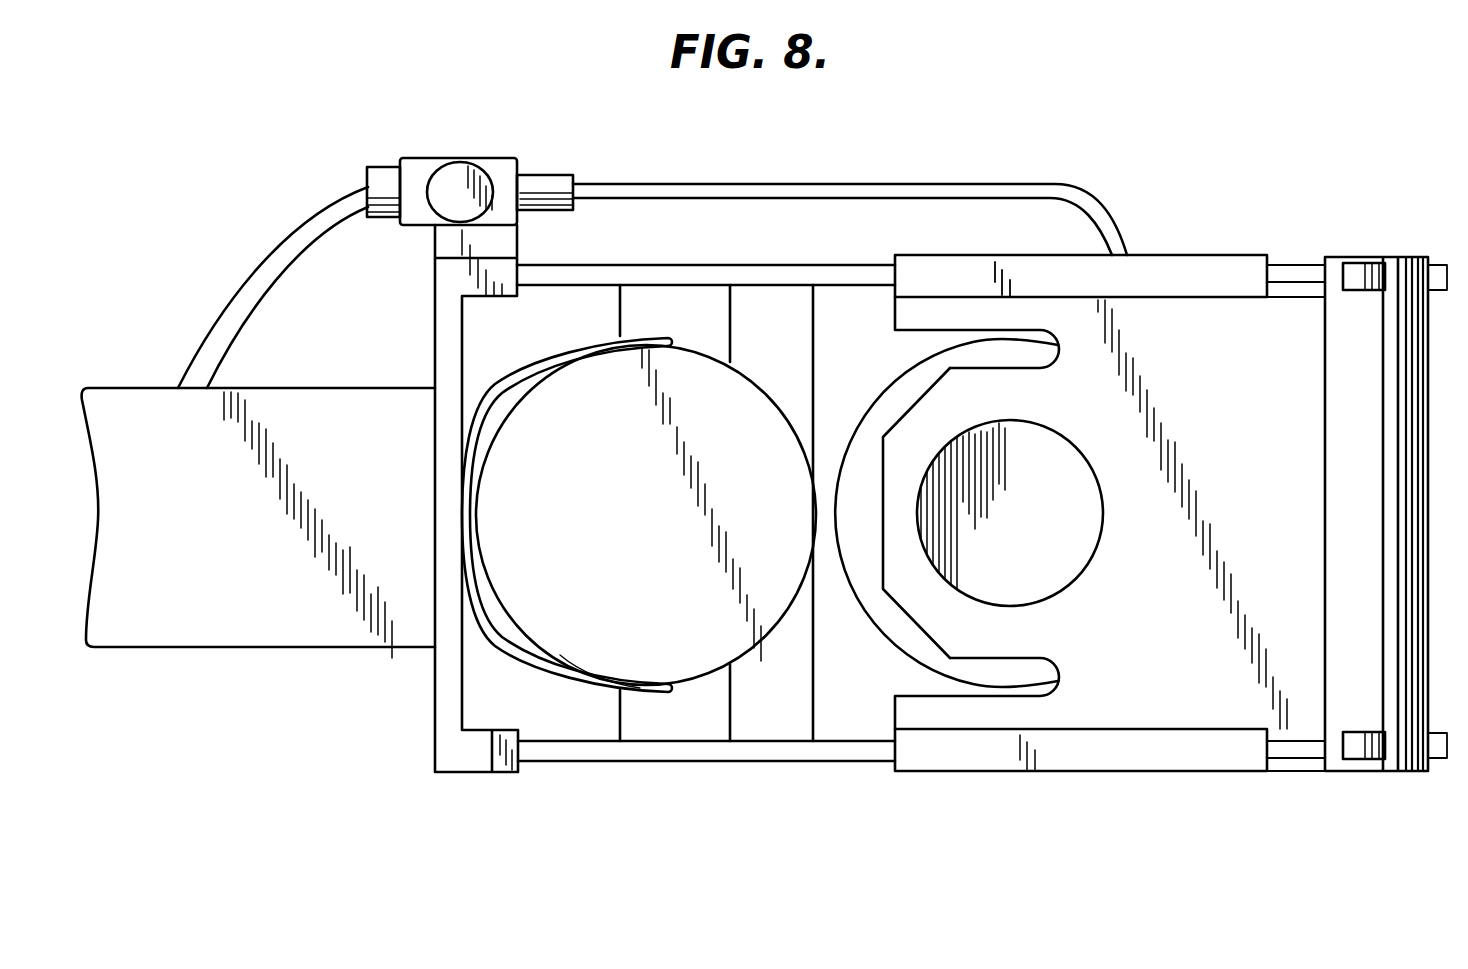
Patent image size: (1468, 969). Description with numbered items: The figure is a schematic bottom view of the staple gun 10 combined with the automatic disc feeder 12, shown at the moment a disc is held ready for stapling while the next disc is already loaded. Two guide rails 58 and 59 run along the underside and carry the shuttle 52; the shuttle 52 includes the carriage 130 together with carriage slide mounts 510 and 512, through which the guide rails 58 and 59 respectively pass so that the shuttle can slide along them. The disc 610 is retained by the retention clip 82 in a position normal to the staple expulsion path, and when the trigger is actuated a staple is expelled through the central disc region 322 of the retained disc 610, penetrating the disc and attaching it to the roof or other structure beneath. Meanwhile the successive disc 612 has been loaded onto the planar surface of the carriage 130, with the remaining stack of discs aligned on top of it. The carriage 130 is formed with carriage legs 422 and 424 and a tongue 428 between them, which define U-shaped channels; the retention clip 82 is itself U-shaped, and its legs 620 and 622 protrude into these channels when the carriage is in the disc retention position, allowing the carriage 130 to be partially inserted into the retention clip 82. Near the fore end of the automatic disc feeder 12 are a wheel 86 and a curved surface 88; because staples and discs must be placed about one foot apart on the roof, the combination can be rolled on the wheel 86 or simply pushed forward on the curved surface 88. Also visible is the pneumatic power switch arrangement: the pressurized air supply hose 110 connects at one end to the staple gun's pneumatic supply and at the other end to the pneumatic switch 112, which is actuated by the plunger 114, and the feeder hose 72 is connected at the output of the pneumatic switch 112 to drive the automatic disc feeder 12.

The staple gun 10 is at (227, 652).
The automatic disc feeder 12 is at (1364, 230).
The shuttle 52 is at (1082, 772).
The guide rail 58 is at (763, 762).
The right side guide rail 59 is at (745, 265).
The feeder hose 72 is at (636, 184).
The retention clip 82 is at (585, 697).
The wheel 86 is at (1383, 292).
The curved surface 88 is at (1412, 540).
The pressurized air supply hose 110 is at (307, 218).
The pneumatic switch 112 is at (493, 158).
The plunger 114 is at (427, 182).
The carriage 130 is at (1154, 730).
The central disc region 322 is at (657, 529).
The carriage leg 422 is at (893, 713).
The carriage leg 424 is at (893, 313).
The tongue 428 is at (893, 605).
The carriage slide mount 510 is at (988, 772).
The carriage slide mount 512 is at (1162, 255).
The disc 610 is at (757, 645).
The successive disc 612 is at (905, 652).
The retention clip leg 620 is at (650, 338).
The retention clip leg 622 is at (660, 697).